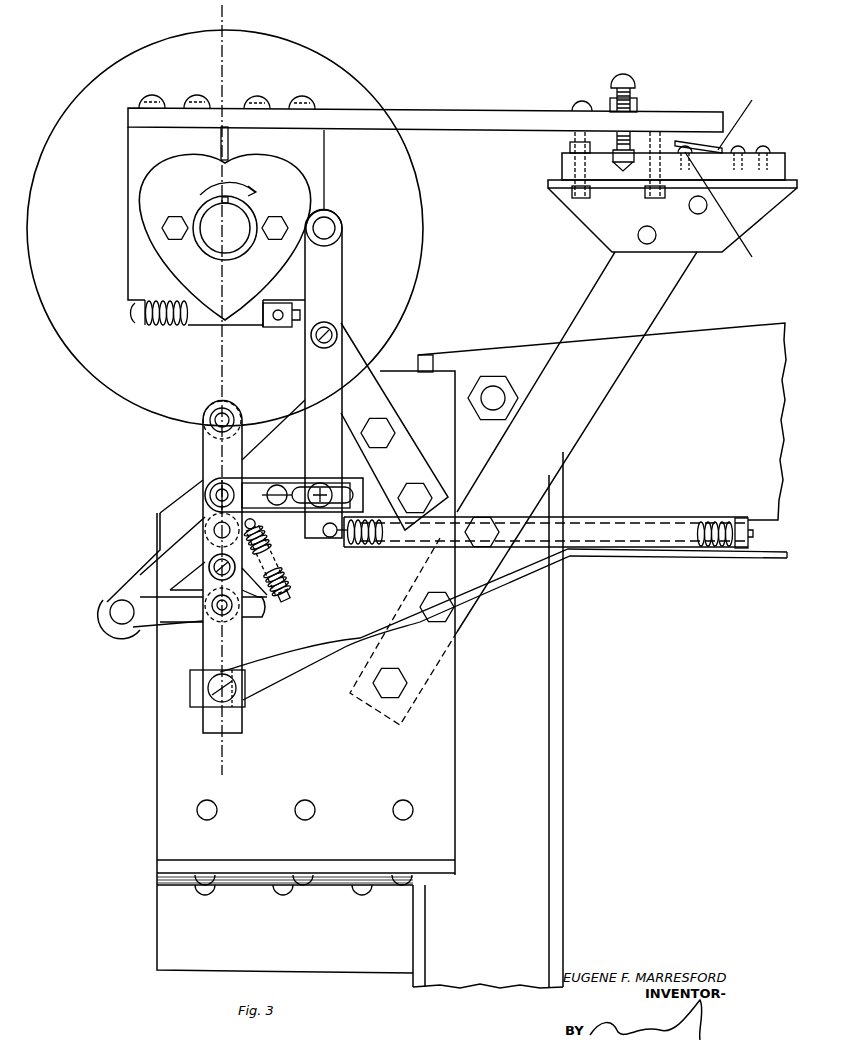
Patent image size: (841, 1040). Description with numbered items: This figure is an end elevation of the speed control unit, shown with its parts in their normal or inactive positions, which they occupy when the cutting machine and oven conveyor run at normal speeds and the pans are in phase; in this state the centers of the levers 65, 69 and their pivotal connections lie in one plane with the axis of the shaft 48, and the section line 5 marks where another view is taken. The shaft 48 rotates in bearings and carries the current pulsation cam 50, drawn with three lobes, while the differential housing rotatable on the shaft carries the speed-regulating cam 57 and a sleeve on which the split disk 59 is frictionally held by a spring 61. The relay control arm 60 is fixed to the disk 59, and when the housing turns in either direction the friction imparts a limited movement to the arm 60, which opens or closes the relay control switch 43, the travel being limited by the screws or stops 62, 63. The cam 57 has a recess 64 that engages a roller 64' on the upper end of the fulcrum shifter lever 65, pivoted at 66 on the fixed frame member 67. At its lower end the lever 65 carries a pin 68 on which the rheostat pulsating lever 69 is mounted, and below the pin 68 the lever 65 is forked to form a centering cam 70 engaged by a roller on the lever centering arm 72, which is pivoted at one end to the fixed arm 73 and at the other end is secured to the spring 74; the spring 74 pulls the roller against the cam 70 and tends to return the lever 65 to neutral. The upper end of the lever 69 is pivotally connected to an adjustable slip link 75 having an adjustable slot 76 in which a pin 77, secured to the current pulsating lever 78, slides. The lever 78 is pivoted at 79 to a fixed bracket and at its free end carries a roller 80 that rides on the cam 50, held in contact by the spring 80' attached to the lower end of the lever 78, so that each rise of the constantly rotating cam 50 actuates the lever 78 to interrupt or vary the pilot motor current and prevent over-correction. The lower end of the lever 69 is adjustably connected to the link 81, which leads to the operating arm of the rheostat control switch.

The section line 5- 5 is at (230, 15).
The relay control switch 43 is at (722, 151).
The shaft 48 is at (240, 245).
The current pulsation cam 50 is at (153, 181).
The speed-regulating cam 57 is at (421, 237).
The split disk 59 is at (333, 153).
The relay control arm 60 is at (489, 116).
The spring 61 is at (150, 326).
The screw or stop 62 is at (582, 104).
The screw or stop 63 is at (634, 75).
The recess 64 is at (196, 421).
The roller 64' is at (240, 420).
The fulcrum shifter lever 65 is at (200, 460).
The pivot 66 is at (215, 527).
The fixed frame member 67 is at (167, 760).
The pin 68 is at (210, 565).
The rheostat pulsating lever 69 is at (210, 632).
The centering cam 70 is at (188, 586).
The lever centering arm 72 is at (157, 620).
The fixed arm 73 is at (150, 578).
The spring 74 is at (284, 583).
The adjustable slip link 75 is at (249, 481).
The adjustable slot 76 is at (349, 494).
The pin 77 is at (318, 480).
The current pulsating lever 78 is at (320, 392).
The pivot 79 is at (338, 332).
The roller 80 is at (340, 334).
The spring 80' is at (538, 530).
The link 81 is at (298, 671).